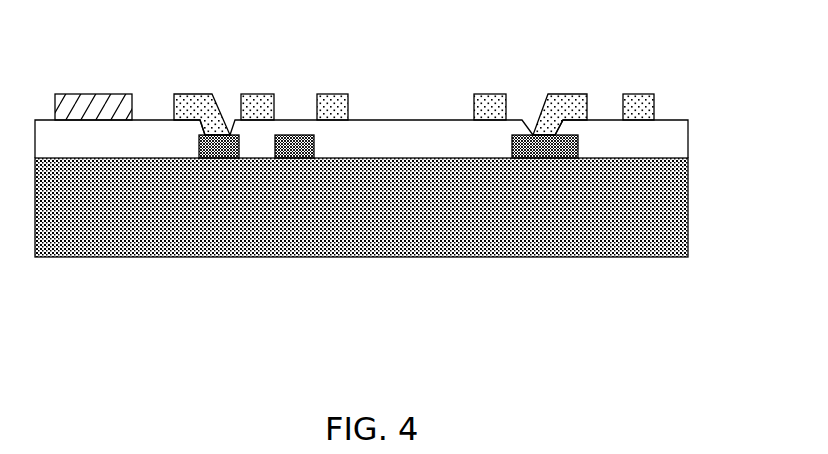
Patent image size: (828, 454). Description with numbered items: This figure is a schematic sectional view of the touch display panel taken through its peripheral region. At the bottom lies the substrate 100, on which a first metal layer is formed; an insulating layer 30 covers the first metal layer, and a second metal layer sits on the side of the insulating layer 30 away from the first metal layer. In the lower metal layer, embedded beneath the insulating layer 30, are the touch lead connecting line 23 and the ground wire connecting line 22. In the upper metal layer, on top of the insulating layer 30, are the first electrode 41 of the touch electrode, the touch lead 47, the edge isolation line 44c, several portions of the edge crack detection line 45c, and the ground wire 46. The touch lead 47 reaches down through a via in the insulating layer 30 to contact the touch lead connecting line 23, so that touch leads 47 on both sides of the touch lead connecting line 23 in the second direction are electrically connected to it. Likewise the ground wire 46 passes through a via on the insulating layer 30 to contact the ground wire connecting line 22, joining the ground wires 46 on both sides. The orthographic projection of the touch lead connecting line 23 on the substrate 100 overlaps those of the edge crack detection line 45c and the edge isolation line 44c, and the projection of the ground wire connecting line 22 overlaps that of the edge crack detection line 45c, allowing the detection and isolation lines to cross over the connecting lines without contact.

The substrate 100 is at (410, 217).
The insulating layer 30 is at (630, 145).
The ground wire connecting line 22 is at (552, 150).
The touch lead connecting line 23 is at (217, 140).
The first electrode 41 is at (87, 108).
The touch lead 47 is at (190, 112).
The edge isolation line 44c is at (257, 94).
The edge crack detection line 45c is at (327, 105).
The ground wire 46 is at (570, 107).